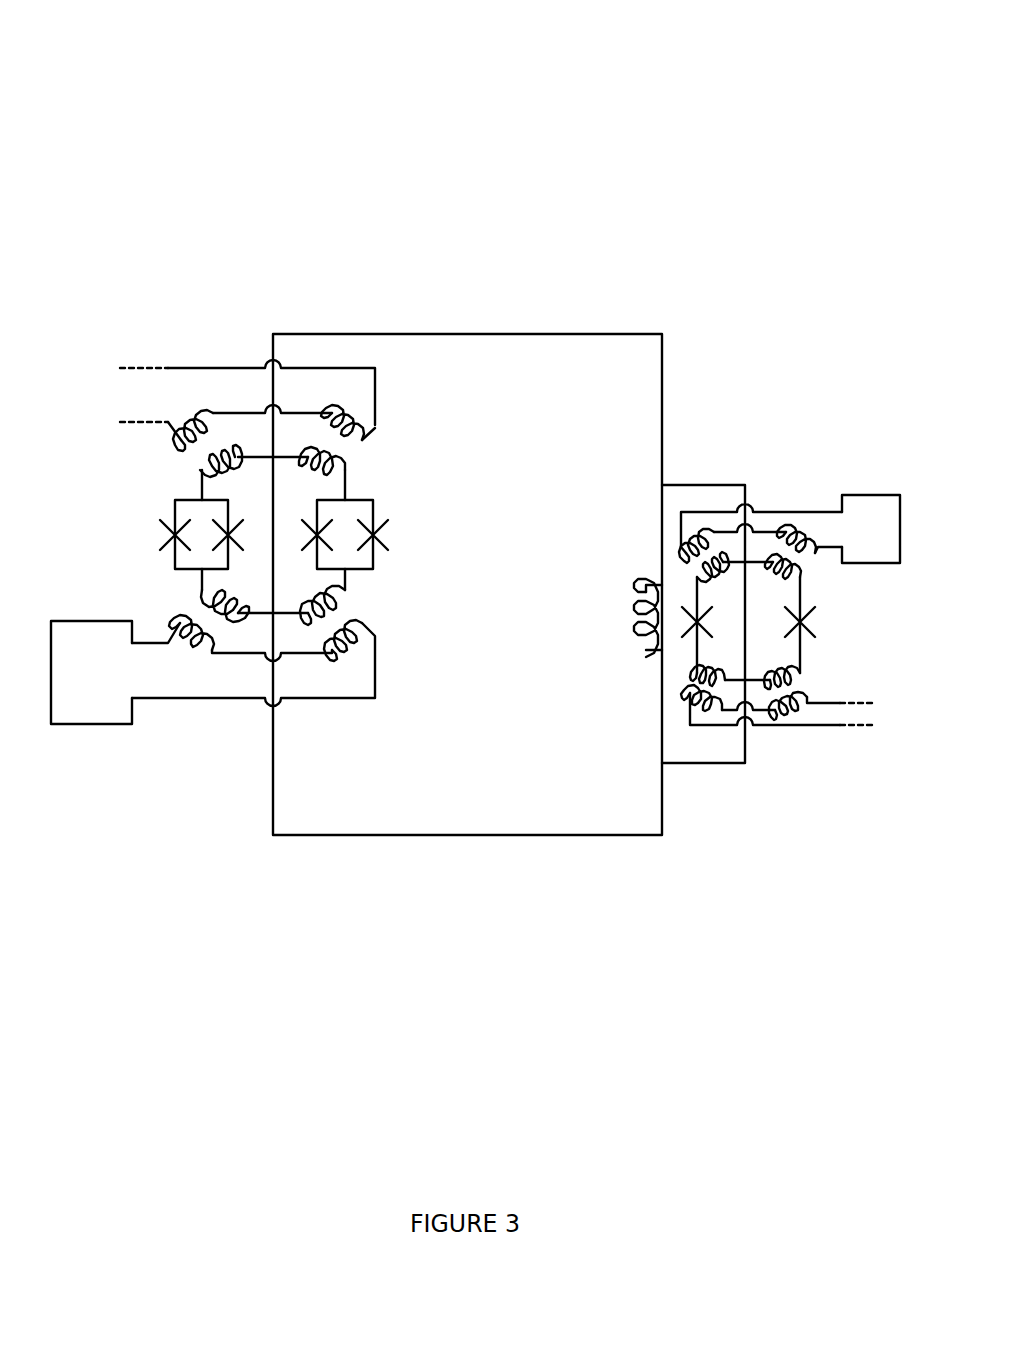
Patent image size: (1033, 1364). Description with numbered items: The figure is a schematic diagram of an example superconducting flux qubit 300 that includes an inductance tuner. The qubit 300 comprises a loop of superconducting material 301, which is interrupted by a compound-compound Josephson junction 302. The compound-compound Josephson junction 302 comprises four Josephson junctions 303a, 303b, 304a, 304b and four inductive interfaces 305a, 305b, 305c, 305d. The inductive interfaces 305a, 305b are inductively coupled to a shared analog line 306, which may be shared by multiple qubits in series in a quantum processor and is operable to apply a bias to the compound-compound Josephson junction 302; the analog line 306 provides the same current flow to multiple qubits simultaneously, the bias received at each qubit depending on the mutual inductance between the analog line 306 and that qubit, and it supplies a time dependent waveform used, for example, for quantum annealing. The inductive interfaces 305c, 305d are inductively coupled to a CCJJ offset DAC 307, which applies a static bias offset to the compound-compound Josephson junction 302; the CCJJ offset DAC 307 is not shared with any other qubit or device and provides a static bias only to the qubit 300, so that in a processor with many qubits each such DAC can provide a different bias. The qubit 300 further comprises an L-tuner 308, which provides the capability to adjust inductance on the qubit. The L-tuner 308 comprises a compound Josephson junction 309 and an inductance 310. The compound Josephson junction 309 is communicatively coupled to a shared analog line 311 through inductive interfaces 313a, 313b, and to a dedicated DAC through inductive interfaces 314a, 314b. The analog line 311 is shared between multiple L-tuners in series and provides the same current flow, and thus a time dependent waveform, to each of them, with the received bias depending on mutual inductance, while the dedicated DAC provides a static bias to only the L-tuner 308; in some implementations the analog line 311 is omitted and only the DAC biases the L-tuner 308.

The superconducting flux qubit 300 is at (181, 47).
The loop of superconducting material 301 is at (573, 334).
The compound-compound Josephson junction 302 is at (107, 479).
The Josephson junction 303a is at (163, 547).
The Josephson junction 303b is at (226, 532).
The Josephson junction 304a is at (320, 533).
The Josephson junction 304b is at (386, 547).
The inductive interface 305a is at (197, 468).
The inductive interface 305b is at (349, 473).
The inductive interface 305c is at (352, 603).
The inductive interface 305d is at (198, 596).
The shared analog line 306 is at (172, 368).
The CCJJ offset DAC 307 is at (357, 698).
The L-tuner 308 is at (738, 429).
The compound Josephson junction 309 is at (828, 611).
The inductance 310 is at (645, 585).
The shared analog line 311 is at (777, 725).
The inductive interface 313a is at (695, 673).
The inductive interface 313b is at (802, 670).
The inductive interface 314a is at (697, 577).
The inductive interface 314b is at (802, 577).